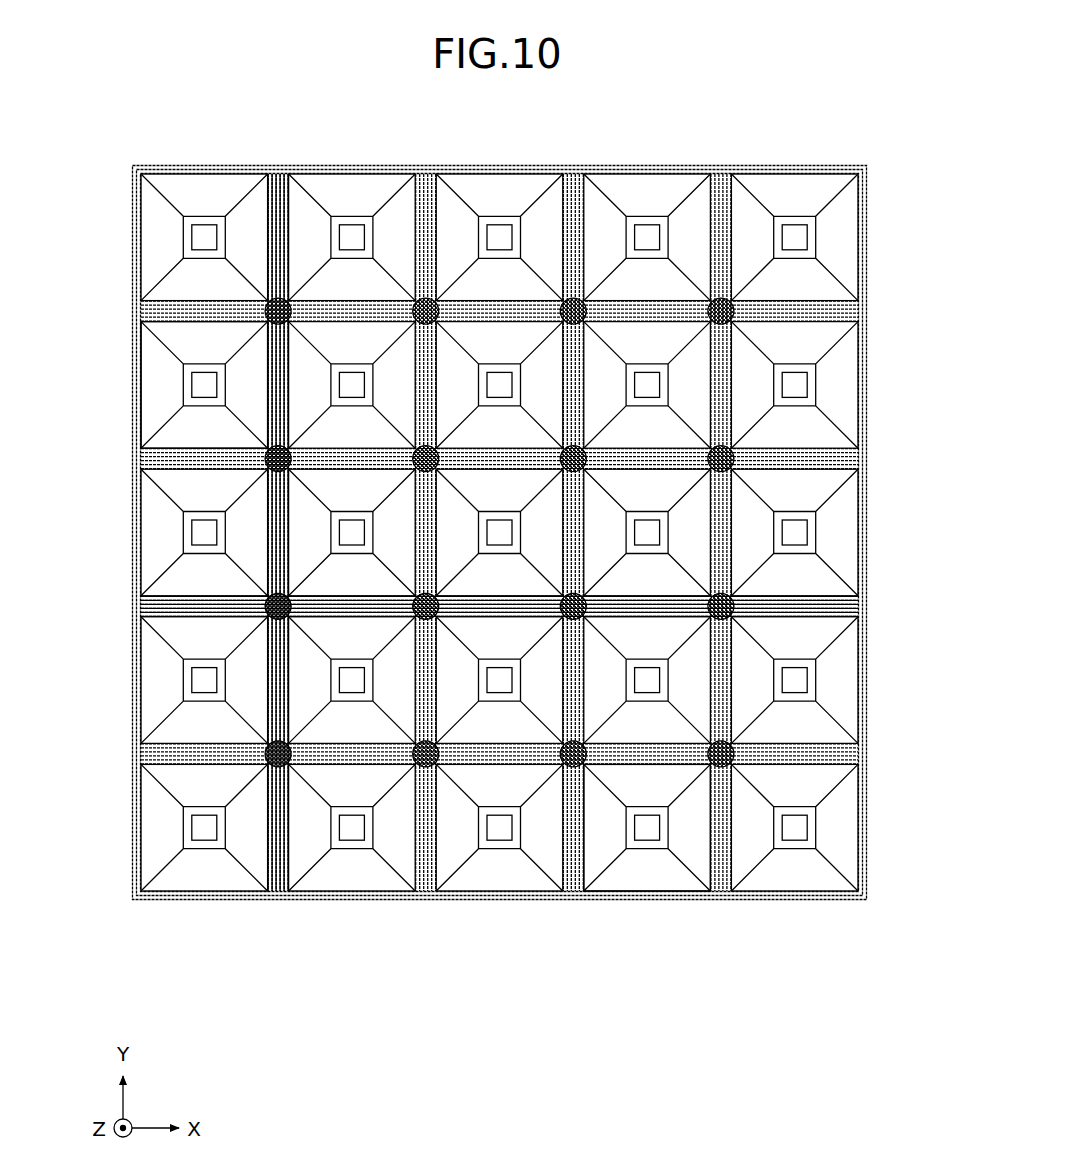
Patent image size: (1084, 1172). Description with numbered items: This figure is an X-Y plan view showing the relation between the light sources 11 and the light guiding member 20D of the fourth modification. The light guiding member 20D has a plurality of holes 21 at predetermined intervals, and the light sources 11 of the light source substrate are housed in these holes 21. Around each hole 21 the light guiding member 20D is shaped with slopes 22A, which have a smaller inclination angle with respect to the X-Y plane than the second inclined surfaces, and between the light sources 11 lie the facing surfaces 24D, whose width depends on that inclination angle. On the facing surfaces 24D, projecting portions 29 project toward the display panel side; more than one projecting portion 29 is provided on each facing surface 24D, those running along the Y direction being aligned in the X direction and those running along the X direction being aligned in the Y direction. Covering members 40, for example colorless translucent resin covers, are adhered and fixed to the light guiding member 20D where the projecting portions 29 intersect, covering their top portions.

The light guiding member 20D is at (868, 193).
The light source 11 is at (795, 238).
The hole 21 is at (647, 243).
The slope 22A is at (603, 215).
The covering member 40 is at (568, 454).
The facing surface 24D is at (130, 457).
The projecting portion 29 is at (121, 606).